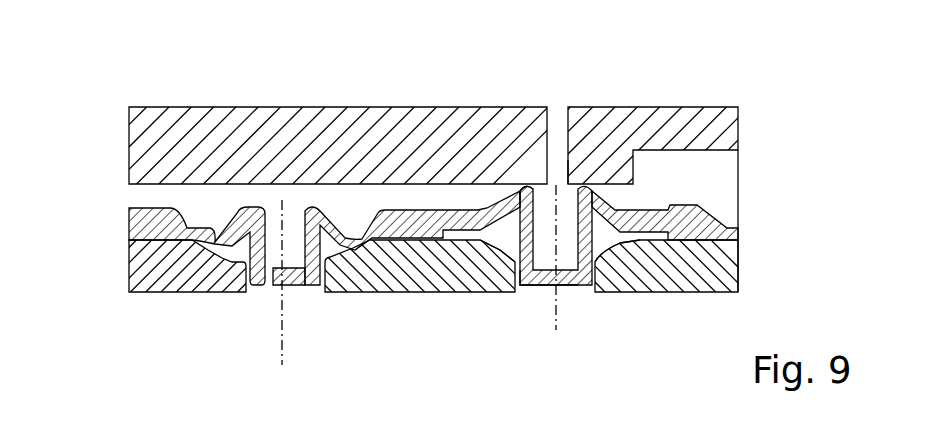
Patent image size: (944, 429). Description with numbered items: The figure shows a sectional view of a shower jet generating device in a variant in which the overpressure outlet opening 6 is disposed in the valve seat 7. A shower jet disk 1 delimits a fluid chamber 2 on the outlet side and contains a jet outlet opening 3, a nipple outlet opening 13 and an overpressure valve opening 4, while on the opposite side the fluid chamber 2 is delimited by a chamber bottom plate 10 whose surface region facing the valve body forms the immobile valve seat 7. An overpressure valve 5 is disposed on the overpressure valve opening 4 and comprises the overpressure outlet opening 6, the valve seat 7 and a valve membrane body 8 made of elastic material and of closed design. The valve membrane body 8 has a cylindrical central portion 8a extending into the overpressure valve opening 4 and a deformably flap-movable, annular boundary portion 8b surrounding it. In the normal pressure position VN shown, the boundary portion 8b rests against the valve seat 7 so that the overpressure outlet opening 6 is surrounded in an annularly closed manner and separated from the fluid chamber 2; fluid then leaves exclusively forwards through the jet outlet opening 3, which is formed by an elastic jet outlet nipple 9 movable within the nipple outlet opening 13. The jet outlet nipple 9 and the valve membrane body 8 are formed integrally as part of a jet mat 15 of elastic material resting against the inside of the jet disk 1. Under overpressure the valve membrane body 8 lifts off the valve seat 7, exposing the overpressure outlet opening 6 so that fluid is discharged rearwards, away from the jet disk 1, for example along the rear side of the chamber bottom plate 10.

The shower jet disk 1 is at (405, 306).
The fluid chamber 2 is at (386, 237).
The jet outlet opening 3 is at (286, 286).
The overpressure valve opening 4 is at (514, 262).
The overpressure valve 5 is at (530, 198).
The overpressure outlet opening 6 is at (557, 130).
The valve seat 7 is at (565, 186).
The valve membrane body 8 is at (537, 222).
The cylindrical central portion 8a is at (600, 272).
The boundary portion 8b is at (512, 193).
The jet outlet nipple 9 is at (302, 288).
The chamber bottom plate 10 is at (145, 150).
The nipple outlet opening 13 is at (326, 292).
The jet mat 15 is at (143, 195).
The normal pressure position VN is at (518, 245).